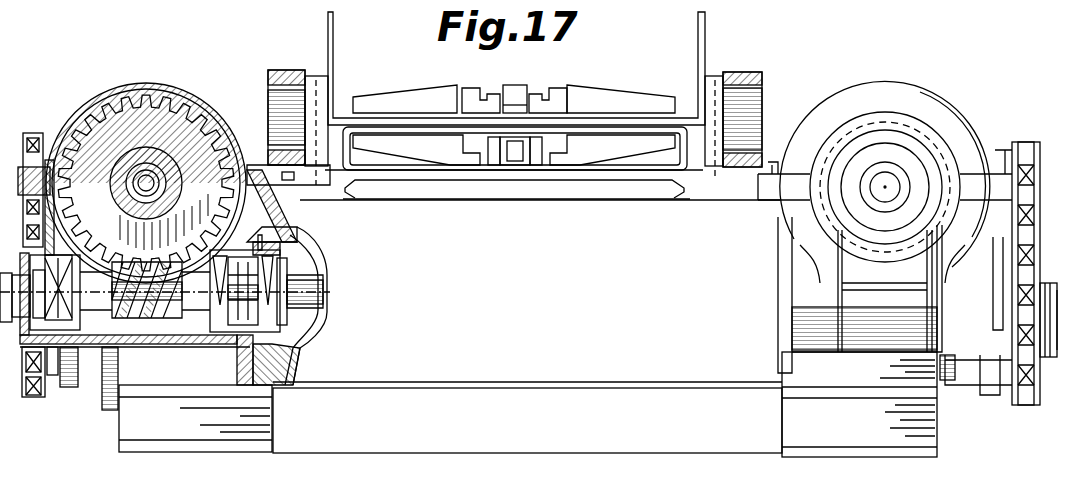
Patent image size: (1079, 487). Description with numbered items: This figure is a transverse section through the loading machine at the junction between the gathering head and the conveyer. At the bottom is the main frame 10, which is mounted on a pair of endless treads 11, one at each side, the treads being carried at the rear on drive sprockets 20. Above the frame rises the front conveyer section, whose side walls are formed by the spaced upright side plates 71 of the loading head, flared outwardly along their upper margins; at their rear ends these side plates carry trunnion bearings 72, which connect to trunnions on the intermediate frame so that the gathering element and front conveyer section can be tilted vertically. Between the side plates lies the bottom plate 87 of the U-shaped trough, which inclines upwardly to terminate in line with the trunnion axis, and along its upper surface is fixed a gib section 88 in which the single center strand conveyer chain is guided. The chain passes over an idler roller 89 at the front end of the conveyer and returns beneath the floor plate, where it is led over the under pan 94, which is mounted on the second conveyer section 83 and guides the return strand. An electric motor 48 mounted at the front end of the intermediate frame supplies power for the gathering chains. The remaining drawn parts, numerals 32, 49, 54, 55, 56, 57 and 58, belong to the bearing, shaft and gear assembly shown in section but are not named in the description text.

The main frame 10 is at (904, 198).
The endless tread 11 is at (131, 428).
The drive sprocket 20 is at (885, 101).
The roller bearing 32 is at (42, 134).
The electric motor 48 is at (445, 273).
The key 49 is at (316, 248).
The housing 54 is at (96, 345).
The gear wheel 55 is at (116, 84).
The worm 56 is at (142, 320).
The gear teeth 57 is at (160, 92).
The hub 58 is at (170, 160).
The side plate 71 is at (328, 24).
The trunnion bearing 72 is at (284, 70).
The second conveyer section 83 is at (714, 48).
The bottom plate 87 is at (378, 118).
The gib section 88 is at (538, 88).
The idler roller 89 is at (122, 8).
The under pan 94 is at (612, 153).